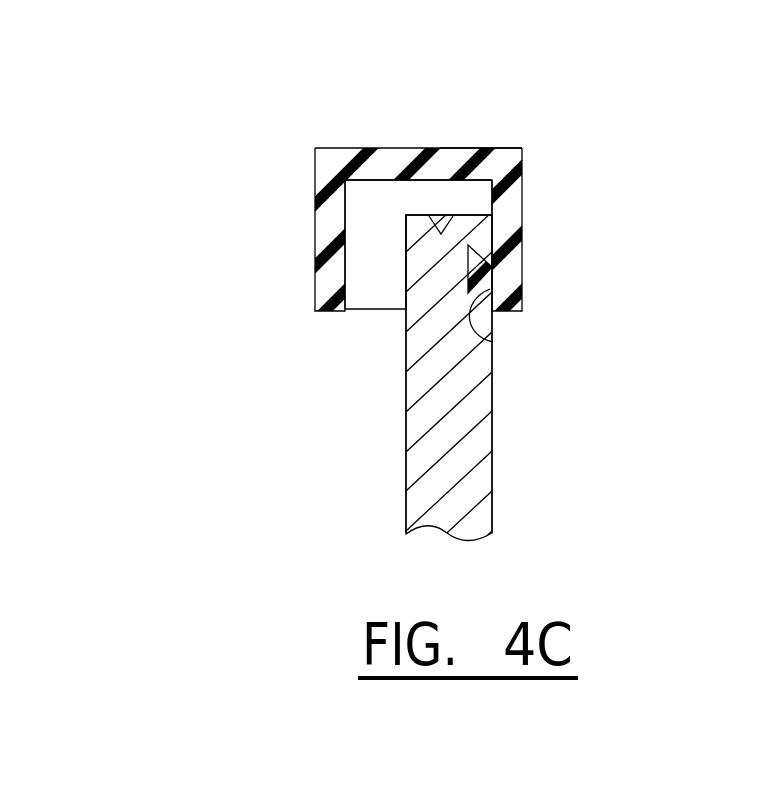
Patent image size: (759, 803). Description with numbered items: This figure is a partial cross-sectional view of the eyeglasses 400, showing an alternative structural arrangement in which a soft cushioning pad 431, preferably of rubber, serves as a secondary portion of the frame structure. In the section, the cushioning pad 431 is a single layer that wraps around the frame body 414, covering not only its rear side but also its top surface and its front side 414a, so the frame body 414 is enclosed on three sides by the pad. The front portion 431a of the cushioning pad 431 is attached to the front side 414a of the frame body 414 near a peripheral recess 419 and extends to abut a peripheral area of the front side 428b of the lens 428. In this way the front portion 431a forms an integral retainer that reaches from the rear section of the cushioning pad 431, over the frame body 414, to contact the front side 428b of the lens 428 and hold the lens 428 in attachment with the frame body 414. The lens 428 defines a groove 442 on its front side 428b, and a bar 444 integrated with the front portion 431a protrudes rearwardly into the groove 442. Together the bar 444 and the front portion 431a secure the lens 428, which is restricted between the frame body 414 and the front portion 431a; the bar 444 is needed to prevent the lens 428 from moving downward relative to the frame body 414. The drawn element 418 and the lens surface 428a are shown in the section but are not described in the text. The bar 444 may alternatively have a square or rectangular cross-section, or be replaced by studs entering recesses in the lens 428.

The eyeglasses 400 is at (556, 131).
The frame body 414 is at (377, 148).
The front side of the frame body 414a is at (522, 152).
The peripheral recess 419 is at (451, 218).
The cushioning pad 431 is at (315, 170).
The front portion of the cushioning pad 431a is at (523, 280).
The groove 442 is at (495, 225).
The bar 444 is at (493, 343).
The insert block 418 is at (372, 311).
The lens 428 is at (480, 426).
The post first side surface 428a is at (406, 463).
The front side of the lens 428b is at (493, 492).